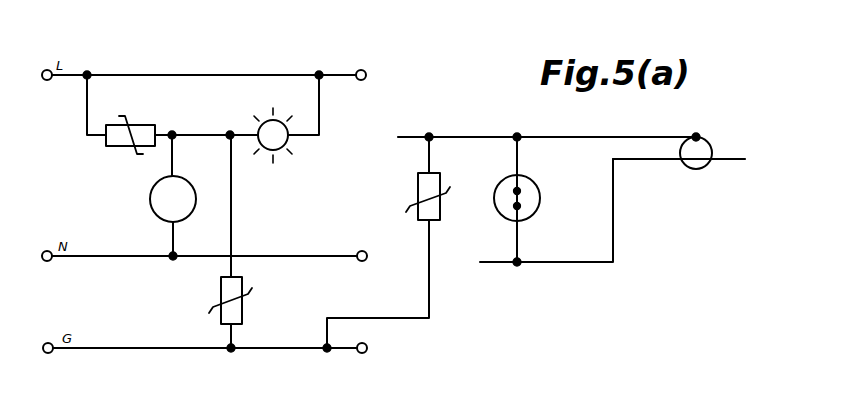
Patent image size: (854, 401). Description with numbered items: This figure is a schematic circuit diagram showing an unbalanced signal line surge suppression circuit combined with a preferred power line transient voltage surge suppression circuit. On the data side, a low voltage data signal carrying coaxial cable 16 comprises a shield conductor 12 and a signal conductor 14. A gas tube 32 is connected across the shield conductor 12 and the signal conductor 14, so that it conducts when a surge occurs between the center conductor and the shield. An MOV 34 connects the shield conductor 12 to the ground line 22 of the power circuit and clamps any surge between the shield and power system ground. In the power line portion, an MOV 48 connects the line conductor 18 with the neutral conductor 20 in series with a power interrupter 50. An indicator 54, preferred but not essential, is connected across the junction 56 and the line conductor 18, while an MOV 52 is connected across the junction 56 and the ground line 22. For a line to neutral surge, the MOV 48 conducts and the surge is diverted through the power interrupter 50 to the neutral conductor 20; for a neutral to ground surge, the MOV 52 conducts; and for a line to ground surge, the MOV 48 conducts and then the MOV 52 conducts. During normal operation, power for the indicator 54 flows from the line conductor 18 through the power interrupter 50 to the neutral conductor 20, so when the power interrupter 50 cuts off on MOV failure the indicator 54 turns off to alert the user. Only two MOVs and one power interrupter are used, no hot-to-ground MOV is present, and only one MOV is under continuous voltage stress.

The shield conductor 12 is at (632, 137).
The signal conductor 14 is at (654, 161).
The coaxial cable 16 is at (708, 142).
The line conductor 18 is at (248, 73).
The neutral conductor 20 is at (323, 256).
The ground line 22 is at (275, 349).
The gas tube 32 is at (495, 190).
The MOV 34 is at (418, 182).
The MOV 48 is at (106, 147).
The power interrupter 50 is at (150, 205).
The MOV 52 is at (221, 283).
The indicator 54 is at (279, 152).
The junction 56 is at (229, 134).